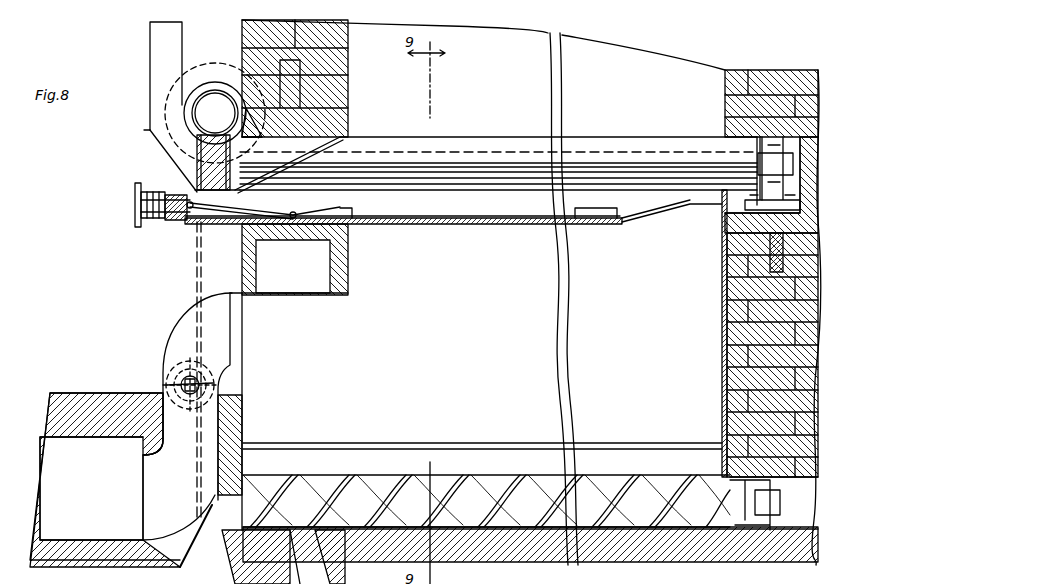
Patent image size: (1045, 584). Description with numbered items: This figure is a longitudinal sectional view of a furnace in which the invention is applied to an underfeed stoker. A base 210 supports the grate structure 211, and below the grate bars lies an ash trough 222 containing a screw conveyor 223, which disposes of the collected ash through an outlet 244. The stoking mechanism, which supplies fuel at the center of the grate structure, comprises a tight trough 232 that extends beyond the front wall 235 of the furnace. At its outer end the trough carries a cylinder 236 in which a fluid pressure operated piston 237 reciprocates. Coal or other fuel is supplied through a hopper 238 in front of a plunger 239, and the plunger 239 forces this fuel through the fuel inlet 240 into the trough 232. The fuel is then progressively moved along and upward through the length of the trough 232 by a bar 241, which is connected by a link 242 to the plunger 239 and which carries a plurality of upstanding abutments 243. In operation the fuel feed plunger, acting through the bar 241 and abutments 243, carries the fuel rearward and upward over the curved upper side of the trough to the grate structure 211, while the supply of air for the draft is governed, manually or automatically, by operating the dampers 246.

The base 210 is at (762, 308).
The grate structure 211 is at (602, 162).
The ash trough 222 is at (475, 530).
The screw conveyor 223 is at (440, 495).
The tight trough 232 is at (440, 222).
The front wall 235 is at (244, 64).
The cylinder 236 is at (158, 222).
The fluid pressure operated piston 237 is at (148, 210).
The hopper 238 is at (168, 146).
The plunger 239 is at (181, 216).
The fuel inlet 240 is at (208, 216).
The bar 241 is at (406, 220).
The link 242 is at (260, 210).
The upstanding abutments 243 is at (346, 217).
The outlet 244 is at (238, 540).
The dampers 246 is at (175, 380).